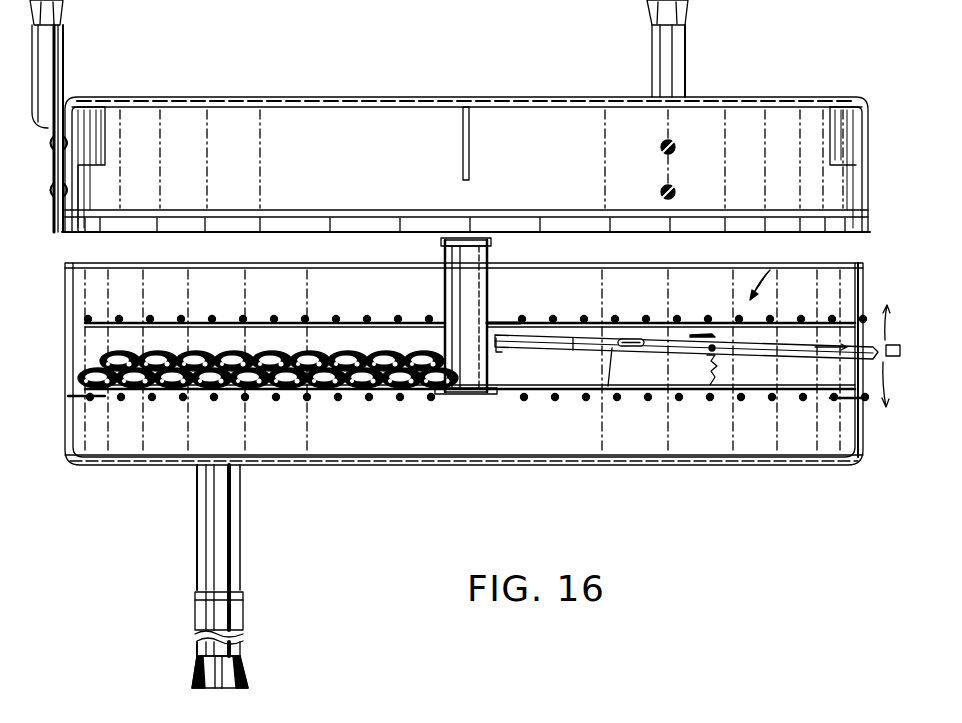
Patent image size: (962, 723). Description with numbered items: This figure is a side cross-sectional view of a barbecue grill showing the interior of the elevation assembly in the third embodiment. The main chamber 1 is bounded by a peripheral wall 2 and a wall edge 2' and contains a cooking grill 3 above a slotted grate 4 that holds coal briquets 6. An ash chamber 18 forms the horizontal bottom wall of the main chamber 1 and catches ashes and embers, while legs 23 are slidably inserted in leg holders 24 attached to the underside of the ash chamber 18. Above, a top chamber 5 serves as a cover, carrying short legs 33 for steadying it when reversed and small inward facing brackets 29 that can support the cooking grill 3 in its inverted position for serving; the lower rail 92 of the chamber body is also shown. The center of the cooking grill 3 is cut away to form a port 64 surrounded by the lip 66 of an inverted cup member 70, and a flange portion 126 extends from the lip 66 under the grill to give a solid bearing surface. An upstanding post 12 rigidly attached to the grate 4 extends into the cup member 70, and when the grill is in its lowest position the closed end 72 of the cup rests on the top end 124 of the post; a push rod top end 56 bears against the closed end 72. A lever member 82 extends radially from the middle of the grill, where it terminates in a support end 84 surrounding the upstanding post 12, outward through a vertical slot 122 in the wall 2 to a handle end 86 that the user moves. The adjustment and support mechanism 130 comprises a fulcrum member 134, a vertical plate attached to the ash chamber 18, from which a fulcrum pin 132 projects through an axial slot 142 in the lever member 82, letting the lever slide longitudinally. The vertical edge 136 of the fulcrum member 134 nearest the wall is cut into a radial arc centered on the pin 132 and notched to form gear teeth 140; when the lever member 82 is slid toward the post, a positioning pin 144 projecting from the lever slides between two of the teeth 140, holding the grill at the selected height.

The main chamber 1 is at (700, 264).
The peripheral wall 2 is at (883, 341).
The tray end wall edge 2' is at (877, 351).
The cooking grill 3 is at (677, 323).
The slotted grate 4 is at (655, 396).
The top chamber 5 is at (403, 93).
The coal briquets 6 is at (266, 352).
The upstanding post 12 is at (490, 372).
The ash chamber 18 is at (668, 468).
The legs 23 is at (244, 612).
The leg holders 24 is at (210, 468).
The brackets 29 is at (105, 145).
The short legs 33 is at (63, 67).
The top end 56 is at (490, 248).
The port 64 is at (456, 334).
The lip 66 is at (492, 325).
The cup member 70 is at (444, 286).
The closed end 72 is at (444, 242).
The lever member 82 is at (567, 356).
The support end 84 is at (498, 345).
The handle end 86 is at (763, 345).
The tray bottom rail 92 is at (450, 468).
The vertical slot 122 is at (860, 370).
The top end 124 is at (470, 238).
The flange portion 126 is at (412, 332).
The adjustment and support mechanism 130 is at (772, 268).
The fulcrum pin 132 is at (634, 350).
The fulcrum member 134 is at (607, 360).
The vertical edge 136 is at (717, 353).
The gear teeth 140 is at (712, 378).
The axial slot 142 is at (632, 338).
The positioning pin 144 is at (715, 346).